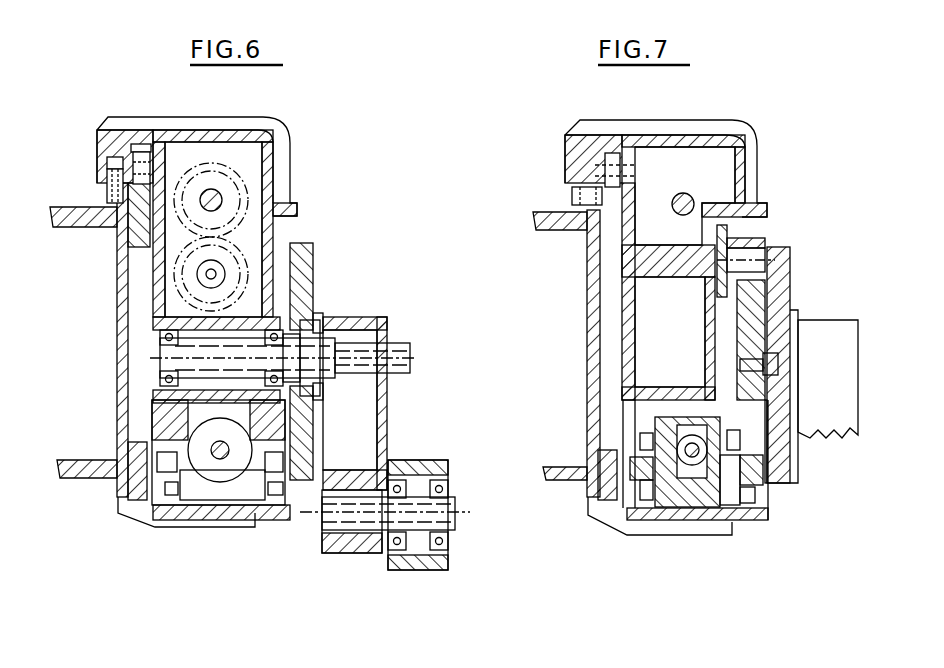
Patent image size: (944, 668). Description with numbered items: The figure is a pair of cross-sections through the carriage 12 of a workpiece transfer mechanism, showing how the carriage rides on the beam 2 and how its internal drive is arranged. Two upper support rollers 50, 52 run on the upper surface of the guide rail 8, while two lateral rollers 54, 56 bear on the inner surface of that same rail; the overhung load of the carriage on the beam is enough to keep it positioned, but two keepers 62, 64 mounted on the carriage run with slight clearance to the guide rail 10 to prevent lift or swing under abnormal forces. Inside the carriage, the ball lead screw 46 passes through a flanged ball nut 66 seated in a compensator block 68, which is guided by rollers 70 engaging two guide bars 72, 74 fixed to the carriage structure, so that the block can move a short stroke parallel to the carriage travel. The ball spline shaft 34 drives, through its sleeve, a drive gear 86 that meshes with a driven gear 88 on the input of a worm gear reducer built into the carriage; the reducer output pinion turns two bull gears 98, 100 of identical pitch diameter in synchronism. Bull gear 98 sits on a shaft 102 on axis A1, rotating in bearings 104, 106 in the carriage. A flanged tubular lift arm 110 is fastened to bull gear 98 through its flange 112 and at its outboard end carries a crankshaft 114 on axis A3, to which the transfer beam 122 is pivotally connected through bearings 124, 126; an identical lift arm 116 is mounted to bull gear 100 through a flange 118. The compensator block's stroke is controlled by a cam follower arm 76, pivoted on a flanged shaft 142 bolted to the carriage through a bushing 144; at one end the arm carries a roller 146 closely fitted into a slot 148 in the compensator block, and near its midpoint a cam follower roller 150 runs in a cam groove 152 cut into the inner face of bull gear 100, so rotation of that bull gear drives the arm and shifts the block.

In FIG. 6, the beam 2 is at (86, 229).
In FIG. 7, the beam 2 is at (548, 232).
In FIG. 6, the guide rail 8 is at (125, 272).
In FIG. 7, the guide rail 8 is at (608, 246).
In FIG. 6, the guide rail 10 is at (128, 445).
In FIG. 7, the guide rail 10 is at (600, 460).
In FIG. 6, the carriage 12 is at (292, 131).
In FIG. 7, the carriage 12 is at (760, 136).
In FIG. 6, the ball spline shaft 34 is at (223, 201).
In FIG. 7, the ball spline shaft 34 is at (688, 199).
In FIG. 6, the ball lead screw 46 is at (219, 456).
In FIG. 7, the ball lead screw 46 is at (692, 450).
In FIG. 6, the upper support roller 50 is at (144, 110).
In FIG. 6, the upper support roller 52 is at (143, 150).
In FIG. 7, the upper support roller 52 is at (613, 162).
In FIG. 6, the lateral roller 54 is at (82, 167).
In FIG. 6, the lateral roller 56 is at (107, 196).
In FIG. 7, the lateral roller 56 is at (574, 196).
In FIG. 6, the keeper 62 is at (118, 512).
In FIG. 7, the keeper 62 is at (592, 518).
In FIG. 6, the keeper 64 is at (150, 526).
In FIG. 7, the keeper 64 is at (628, 536).
In FIG. 6, the flanged ball nut 66 is at (222, 482).
In FIG. 7, the flanged ball nut 66 is at (700, 470).
In FIG. 6, the compensator block 68 is at (245, 505).
In FIG. 7, the compensator block 68 is at (690, 482).
In FIG. 6, the roller 70 is at (172, 492).
In FIG. 7, the roller 70 is at (640, 440).
In FIG. 6, the guide bar 72 is at (165, 458).
In FIG. 7, the guide bar 72 is at (637, 474).
In FIG. 6, the guide bar 74 is at (278, 472).
In FIG. 7, the guide bar 74 is at (765, 480).
In FIG. 7, the cam follower arm 76 is at (758, 240).
In FIG. 6, the drive gear 86 is at (223, 168).
In FIG. 6, the driven gear 88 is at (237, 262).
In FIG. 6, the bull gear 98 is at (314, 256).
In FIG. 7, the bull gear 100 is at (770, 246).
In FIG. 6, the shaft 102 is at (160, 362).
In FIG. 6, the bearing 104 is at (165, 336).
In FIG. 6, the bearing 106 is at (318, 318).
In FIG. 6, the flanged tubular lift arm 110 is at (392, 325).
In FIG. 6, the flange 112 is at (332, 326).
In FIG. 6, the crankshaft 114 is at (452, 503).
In FIG. 7, the lift arm 116 is at (830, 437).
In FIG. 7, the flange 118 is at (795, 321).
In FIG. 6, the transfer beam 122 is at (420, 570).
In FIG. 6, the bearing 124 is at (410, 488).
In FIG. 6, the bearing 126 is at (445, 484).
In FIG. 7, the flanged shaft 142 is at (770, 268).
In FIG. 7, the bushing 144 is at (752, 274).
In FIG. 7, the roller 146 is at (733, 430).
In FIG. 7, the groove or slot 148 is at (718, 470).
In FIG. 7, the cam follower roller 150 is at (777, 380).
In FIG. 7, the cam groove 152 is at (776, 400).
In FIG. 6, the axis A1 is at (394, 362).
In FIG. 6, the axis A3 is at (478, 512).